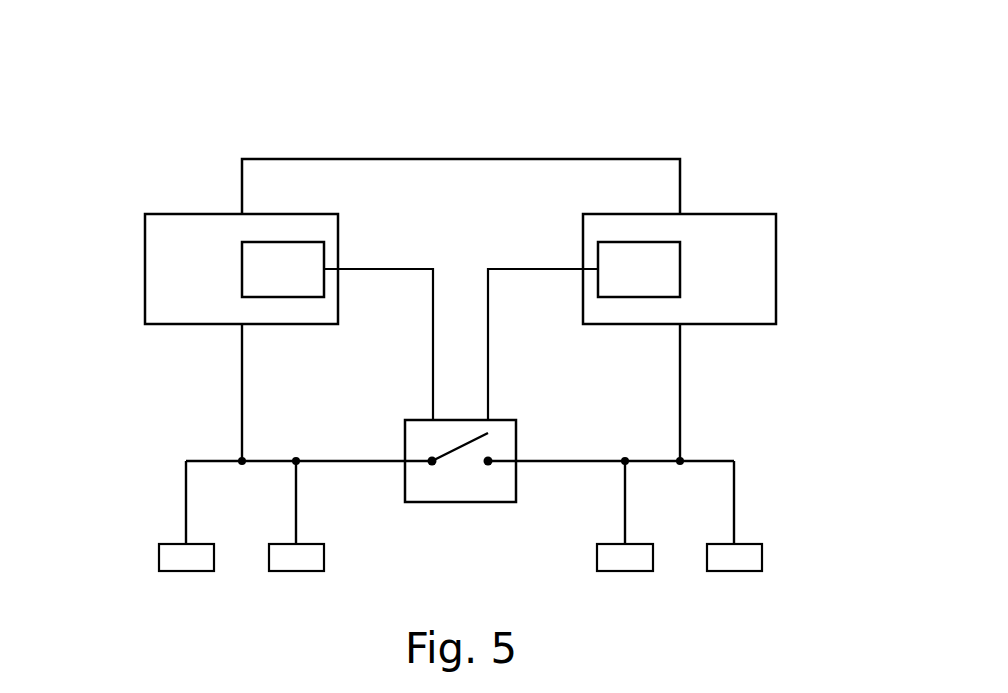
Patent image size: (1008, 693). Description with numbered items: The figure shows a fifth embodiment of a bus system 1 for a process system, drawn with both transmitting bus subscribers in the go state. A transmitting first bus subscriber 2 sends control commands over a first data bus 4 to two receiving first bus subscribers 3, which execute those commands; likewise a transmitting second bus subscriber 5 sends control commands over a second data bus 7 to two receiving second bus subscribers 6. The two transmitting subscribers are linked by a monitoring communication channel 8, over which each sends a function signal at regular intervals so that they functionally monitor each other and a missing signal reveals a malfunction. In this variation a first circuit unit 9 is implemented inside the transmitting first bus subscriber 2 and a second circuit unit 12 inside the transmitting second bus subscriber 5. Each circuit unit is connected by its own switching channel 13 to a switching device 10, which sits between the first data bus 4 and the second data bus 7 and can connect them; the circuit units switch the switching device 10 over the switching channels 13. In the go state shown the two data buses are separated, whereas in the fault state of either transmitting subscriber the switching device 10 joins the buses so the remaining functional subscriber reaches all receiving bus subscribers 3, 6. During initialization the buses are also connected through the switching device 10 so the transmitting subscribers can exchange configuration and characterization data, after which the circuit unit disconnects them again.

The bus system 1 is at (126, 73).
The transmitting first bus subscriber 2 is at (185, 270).
The receiving first bus subscribers 3 is at (178, 562).
The first data bus 4 is at (242, 395).
The transmitting second bus subscriber 5 is at (762, 242).
The receiving second bus subscribers 6 is at (617, 562).
The second data bus 7 is at (680, 393).
The monitoring communication channel 8 is at (585, 159).
The first circuit unit 9 is at (278, 255).
The switching device 10 is at (488, 488).
The second circuit unit 12 is at (642, 257).
The switching channels 13 is at (412, 268).